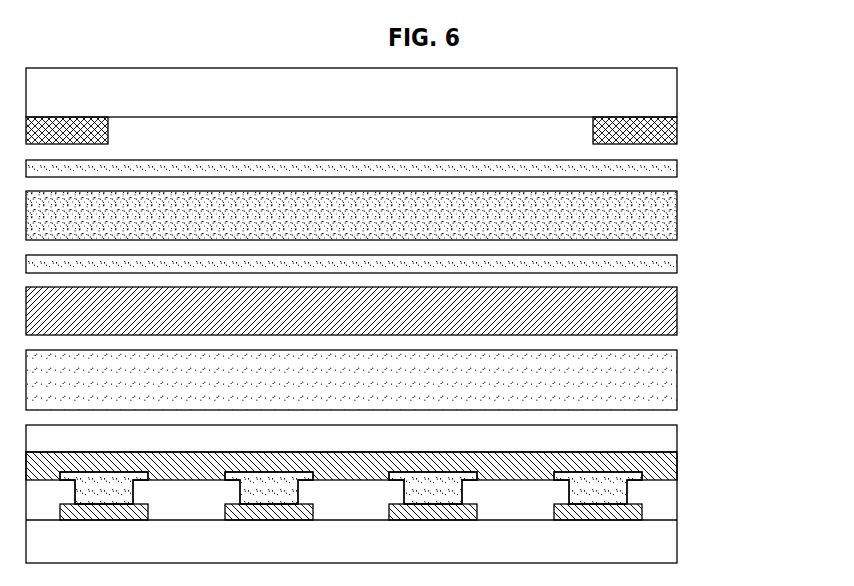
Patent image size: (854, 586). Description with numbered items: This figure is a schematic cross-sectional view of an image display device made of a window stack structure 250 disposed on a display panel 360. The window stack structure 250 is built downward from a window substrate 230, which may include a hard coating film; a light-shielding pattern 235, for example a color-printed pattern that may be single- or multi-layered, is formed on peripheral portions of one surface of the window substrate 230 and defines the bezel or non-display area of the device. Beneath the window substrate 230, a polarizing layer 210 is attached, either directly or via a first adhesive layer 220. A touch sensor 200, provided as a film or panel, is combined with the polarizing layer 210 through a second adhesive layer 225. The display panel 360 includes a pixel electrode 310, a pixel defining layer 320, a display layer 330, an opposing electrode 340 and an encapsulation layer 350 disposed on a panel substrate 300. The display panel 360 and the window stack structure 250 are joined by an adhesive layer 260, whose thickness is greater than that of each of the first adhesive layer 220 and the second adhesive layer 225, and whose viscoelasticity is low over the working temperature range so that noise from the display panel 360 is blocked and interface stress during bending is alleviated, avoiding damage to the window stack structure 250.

The touch sensor 200 is at (670, 308).
The polarizing layer 210 is at (670, 216).
The first adhesive layer 220 is at (670, 168).
The second adhesive layer 225 is at (670, 264).
The window substrate 230 is at (670, 95).
The light-shielding pattern 235 is at (670, 131).
The window stack structure 250 is at (774, 87).
The adhesive layer 260 is at (670, 380).
The panel substrate 300 is at (670, 542).
The pixel electrode 310 is at (642, 507).
The pixel defining layer 320 is at (670, 490).
The display layer 330 is at (612, 462).
The opposing electrode 340 is at (670, 465).
The encapsulation layer 350 is at (670, 440).
The display panel 360 is at (772, 408).